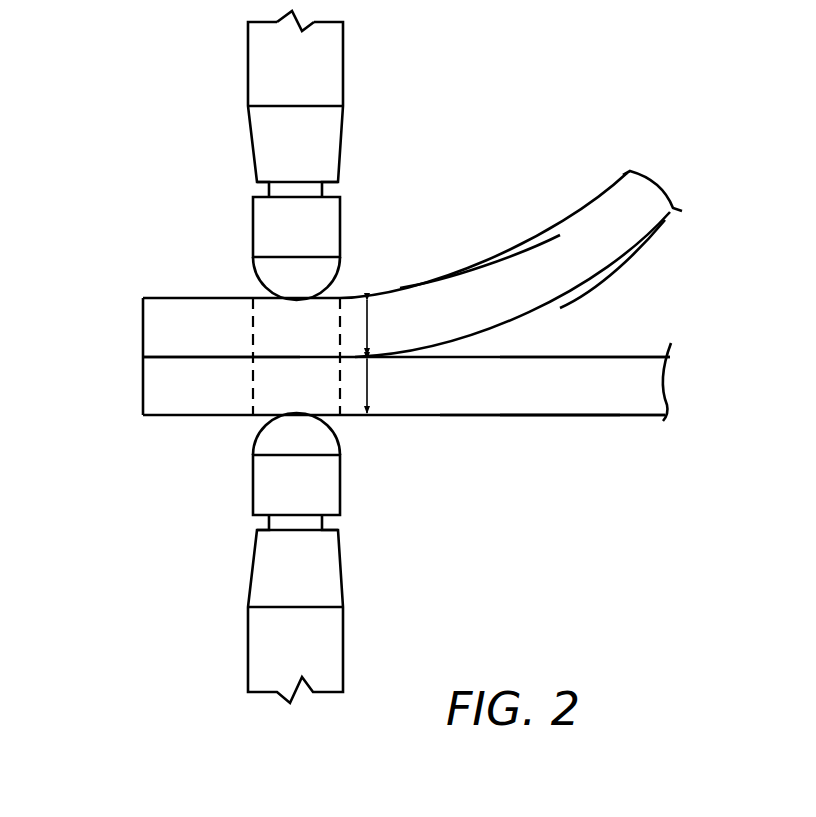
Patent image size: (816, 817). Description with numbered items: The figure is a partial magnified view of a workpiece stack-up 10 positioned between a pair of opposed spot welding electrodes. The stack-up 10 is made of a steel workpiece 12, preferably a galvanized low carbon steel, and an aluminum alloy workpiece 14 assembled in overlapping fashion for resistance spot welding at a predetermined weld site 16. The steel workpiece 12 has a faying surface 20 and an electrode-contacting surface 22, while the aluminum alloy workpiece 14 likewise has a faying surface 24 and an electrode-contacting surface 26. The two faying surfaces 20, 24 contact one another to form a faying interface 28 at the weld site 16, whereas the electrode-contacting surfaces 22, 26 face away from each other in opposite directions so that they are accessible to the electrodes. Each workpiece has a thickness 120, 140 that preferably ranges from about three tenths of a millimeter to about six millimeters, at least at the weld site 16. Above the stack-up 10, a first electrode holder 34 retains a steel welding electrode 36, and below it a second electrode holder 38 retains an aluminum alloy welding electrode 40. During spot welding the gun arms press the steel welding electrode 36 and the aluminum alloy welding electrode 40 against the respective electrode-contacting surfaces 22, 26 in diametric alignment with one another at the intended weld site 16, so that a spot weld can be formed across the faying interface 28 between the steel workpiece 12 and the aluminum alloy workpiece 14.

The workpiece stack-up 10 is at (141, 357).
The steel workpiece 12 is at (622, 210).
The aluminum alloy workpiece 14 is at (607, 393).
The weld site 16 is at (250, 347).
The faying surface 20 is at (633, 258).
The electrode-contacting surface 22 is at (547, 247).
The faying surface 24 is at (570, 357).
The electrode-contacting surface 26 is at (533, 416).
The faying interface 28 is at (193, 355).
The first electrode holder 34 is at (323, 148).
The steel welding electrode 36 is at (250, 225).
The second electrode holder 38 is at (323, 562).
The aluminum alloy welding electrode 40 is at (250, 480).
The thickness 120 is at (368, 320).
The thickness 140 is at (368, 383).